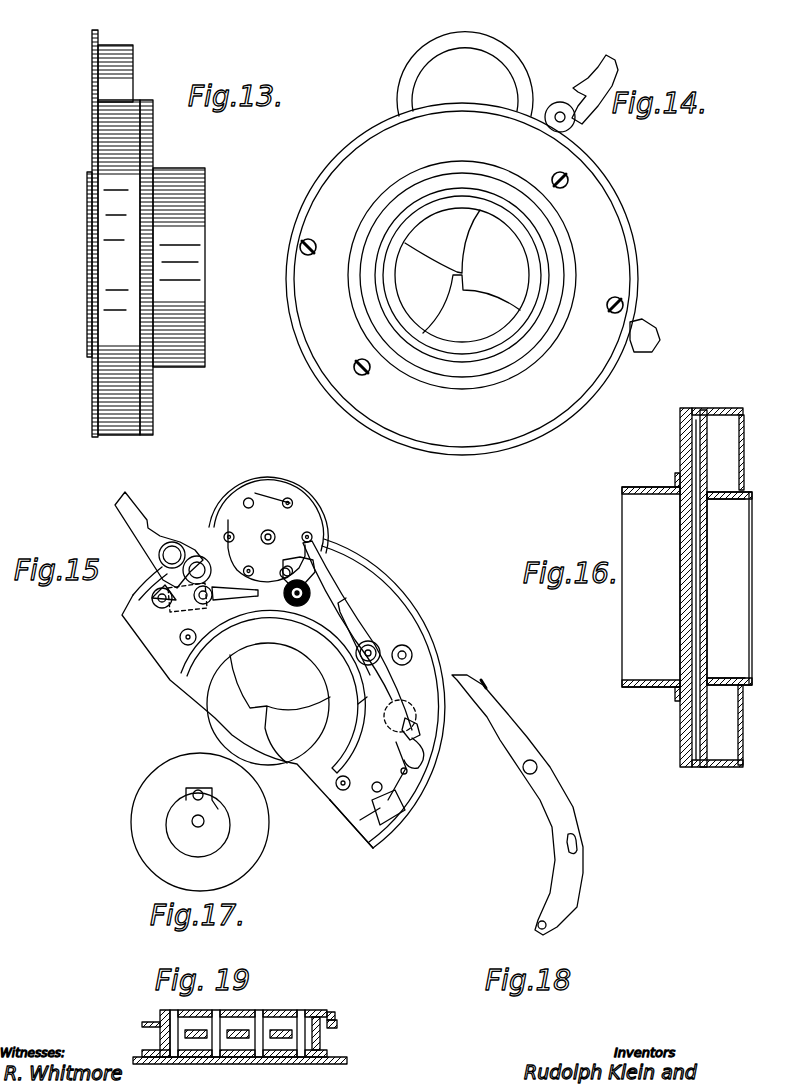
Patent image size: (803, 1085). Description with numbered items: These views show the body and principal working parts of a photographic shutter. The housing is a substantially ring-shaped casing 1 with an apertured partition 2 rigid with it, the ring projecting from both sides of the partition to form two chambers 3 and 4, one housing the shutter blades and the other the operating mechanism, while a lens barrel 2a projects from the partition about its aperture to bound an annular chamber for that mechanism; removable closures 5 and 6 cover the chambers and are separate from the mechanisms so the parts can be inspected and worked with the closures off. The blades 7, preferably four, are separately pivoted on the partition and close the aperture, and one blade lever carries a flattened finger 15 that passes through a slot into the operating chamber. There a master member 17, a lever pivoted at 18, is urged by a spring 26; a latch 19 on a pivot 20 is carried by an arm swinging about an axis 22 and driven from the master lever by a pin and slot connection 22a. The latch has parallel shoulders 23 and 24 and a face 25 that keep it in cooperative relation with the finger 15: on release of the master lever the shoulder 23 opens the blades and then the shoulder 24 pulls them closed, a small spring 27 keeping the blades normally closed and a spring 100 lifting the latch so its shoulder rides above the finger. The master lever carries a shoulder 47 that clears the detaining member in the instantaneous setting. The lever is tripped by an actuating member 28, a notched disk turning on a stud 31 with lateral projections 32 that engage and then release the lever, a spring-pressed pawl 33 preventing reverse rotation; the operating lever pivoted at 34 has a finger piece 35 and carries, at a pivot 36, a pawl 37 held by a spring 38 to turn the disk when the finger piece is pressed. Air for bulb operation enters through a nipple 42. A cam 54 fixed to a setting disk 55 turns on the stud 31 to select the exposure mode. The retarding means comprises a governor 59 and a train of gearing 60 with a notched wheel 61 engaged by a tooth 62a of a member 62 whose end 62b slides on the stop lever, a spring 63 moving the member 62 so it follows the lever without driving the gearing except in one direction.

In FIG. 16, the casing 1 is at (725, 408).
In FIG. 15, the casing 1 is at (414, 614).
In FIG. 16, the partition 2 is at (729, 567).
In FIG. 15, the partition 2 is at (392, 604).
In FIG. 16, the lens barrel 2a is at (726, 585).
In FIG. 16, the chamber 3 is at (690, 432).
In FIG. 16, the chamber 4 is at (714, 588).
In FIG. 15, the chamber 4 is at (278, 680).
In FIG. 13, the removable closure 5 is at (158, 140).
In FIG. 14, the removable closure 5 is at (533, 410).
In FIG. 16, the removable closure 5 is at (688, 448).
In FIG. 13, the removable closure 6 is at (92, 376).
In FIG. 16, the removable closure 6 is at (725, 591).
In FIG. 14, the shutter blades 7 is at (462, 275).
In FIG. 15, the shutter blades 7 is at (268, 704).
In FIG. 15, the finger 15 is at (392, 812).
In FIG. 15, the master member 17 is at (320, 602).
In FIG. 18, the master member 17 is at (575, 803).
In FIG. 15, the pivot 18 is at (373, 651).
In FIG. 18, the pivot 18 is at (540, 767).
In FIG. 15, the latch 19 is at (398, 781).
In FIG. 15, the pivot 20 is at (415, 757).
In FIG. 15, the axis 22 is at (397, 719).
In FIG. 15, the pin and slot connection 22a is at (420, 728).
In FIG. 18, the pin and slot connection 22a is at (583, 845).
In FIG. 15, the shoulder 23 is at (389, 798).
In FIG. 15, the shoulder 24 is at (368, 830).
In FIG. 15, the face 25 is at (376, 784).
In FIG. 15, the spring 26 is at (367, 698).
In FIG. 15, the spring 27 is at (357, 790).
In FIG. 15, the actuating member 28 is at (273, 506).
In FIG. 15, the stud 31 is at (273, 535).
In FIG. 15, the lateral projections 32 is at (291, 505).
In FIG. 15, the pawl 33 is at (315, 561).
In FIG. 14, the pivot 34 is at (560, 112).
In FIG. 15, the pivot 34 is at (174, 552).
In FIG. 14, the finger piece 35 is at (603, 72).
In FIG. 15, the finger piece 35 is at (130, 503).
In FIG. 15, the pivot 36 is at (151, 596).
In FIG. 15, the pawl 37 is at (237, 598).
In FIG. 15, the spring 38 is at (212, 600).
In FIG. 14, the nipple 42 is at (652, 336).
In FIG. 18, the shoulder 47 is at (486, 684).
In FIG. 17, the cam 54 is at (208, 846).
In FIG. 13, the setting disk 55 is at (94, 48).
In FIG. 14, the setting disk 55 is at (430, 49).
In FIG. 17, the setting disk 55 is at (154, 778).
In FIG. 19, the governor 59 is at (157, 1022).
In FIG. 19, the train of gearing 60 is at (232, 1014).
In FIG. 19, the notched wheel 61 is at (338, 1025).
In FIG. 19, the member 62 is at (290, 1010).
In FIG. 19, the tooth 62a is at (278, 1010).
In FIG. 19, the end 62b is at (334, 1016).
In FIG. 19, the spring 63 is at (322, 1010).
In FIG. 15, the spring 100 is at (406, 772).